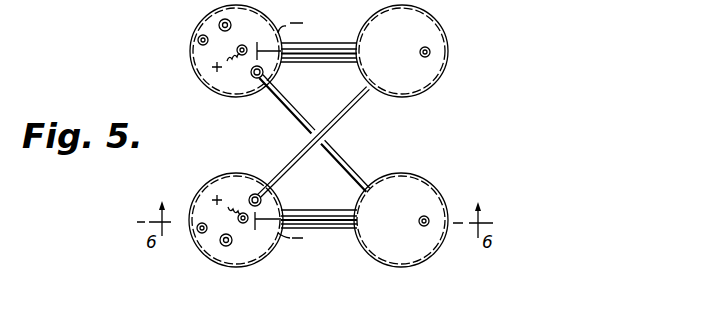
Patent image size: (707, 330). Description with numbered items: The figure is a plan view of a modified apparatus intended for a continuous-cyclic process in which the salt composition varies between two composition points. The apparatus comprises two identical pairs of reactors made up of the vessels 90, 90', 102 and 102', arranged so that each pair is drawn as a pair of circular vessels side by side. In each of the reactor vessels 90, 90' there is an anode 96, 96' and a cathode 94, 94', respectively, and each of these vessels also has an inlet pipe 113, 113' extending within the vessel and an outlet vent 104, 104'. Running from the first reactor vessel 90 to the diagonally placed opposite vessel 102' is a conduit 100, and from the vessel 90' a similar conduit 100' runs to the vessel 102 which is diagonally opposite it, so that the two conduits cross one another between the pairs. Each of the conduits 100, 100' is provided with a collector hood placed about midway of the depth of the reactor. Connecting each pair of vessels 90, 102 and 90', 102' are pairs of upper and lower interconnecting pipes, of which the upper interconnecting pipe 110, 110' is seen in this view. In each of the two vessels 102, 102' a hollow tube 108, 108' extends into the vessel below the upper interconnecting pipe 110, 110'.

The reactor vessel 90 is at (230, 224).
The reactor vessel 90' is at (218, 51).
The cathode 94 is at (277, 238).
The cathode 94' is at (287, 65).
The anode 96 is at (254, 184).
The anode 96' is at (220, 81).
The conduit 100 is at (309, 146).
The conduit 100' is at (322, 129).
The vessel 102 is at (410, 224).
The vessel 102' is at (422, 51).
The outlet vent 104 is at (233, 262).
The outlet vent 104' is at (196, 17).
The hollow tube 108 is at (446, 193).
The hollow tube 108' is at (457, 49).
The upper interconnecting pipe 110 is at (319, 208).
The upper interconnecting pipe 110' is at (319, 38).
The inlet pipe 113 is at (184, 237).
The inlet pipe 113' is at (178, 34).